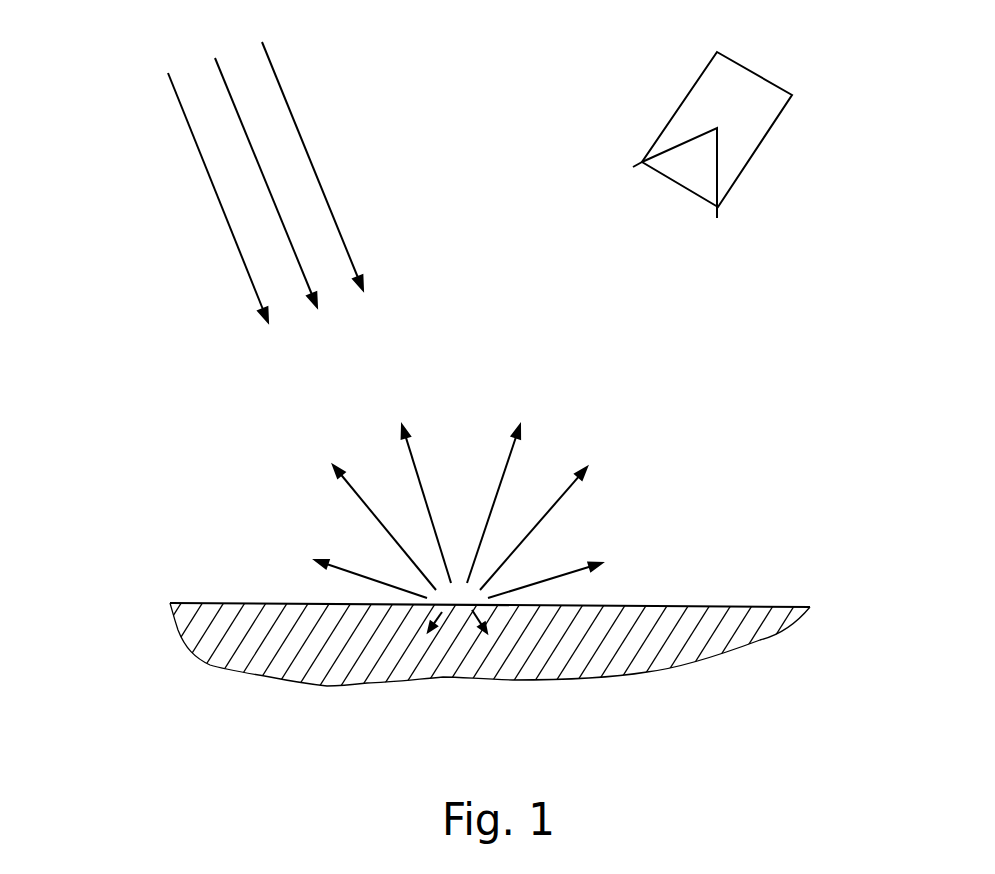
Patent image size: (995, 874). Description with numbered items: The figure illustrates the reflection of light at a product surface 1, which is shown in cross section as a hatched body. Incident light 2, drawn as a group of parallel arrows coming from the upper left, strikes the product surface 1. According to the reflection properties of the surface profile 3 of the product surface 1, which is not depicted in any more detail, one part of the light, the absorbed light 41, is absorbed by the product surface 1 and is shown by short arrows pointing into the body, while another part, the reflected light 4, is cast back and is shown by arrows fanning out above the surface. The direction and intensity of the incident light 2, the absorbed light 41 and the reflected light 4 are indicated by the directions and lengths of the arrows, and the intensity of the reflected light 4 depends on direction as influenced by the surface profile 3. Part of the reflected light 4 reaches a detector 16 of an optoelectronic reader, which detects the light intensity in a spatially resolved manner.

The product surface 1 is at (772, 572).
The incident light 2 is at (324, 82).
The surface profile 3 is at (152, 602).
The reflected light 4 is at (262, 506).
The detector 16 is at (720, 165).
The absorbed light 41 is at (435, 652).